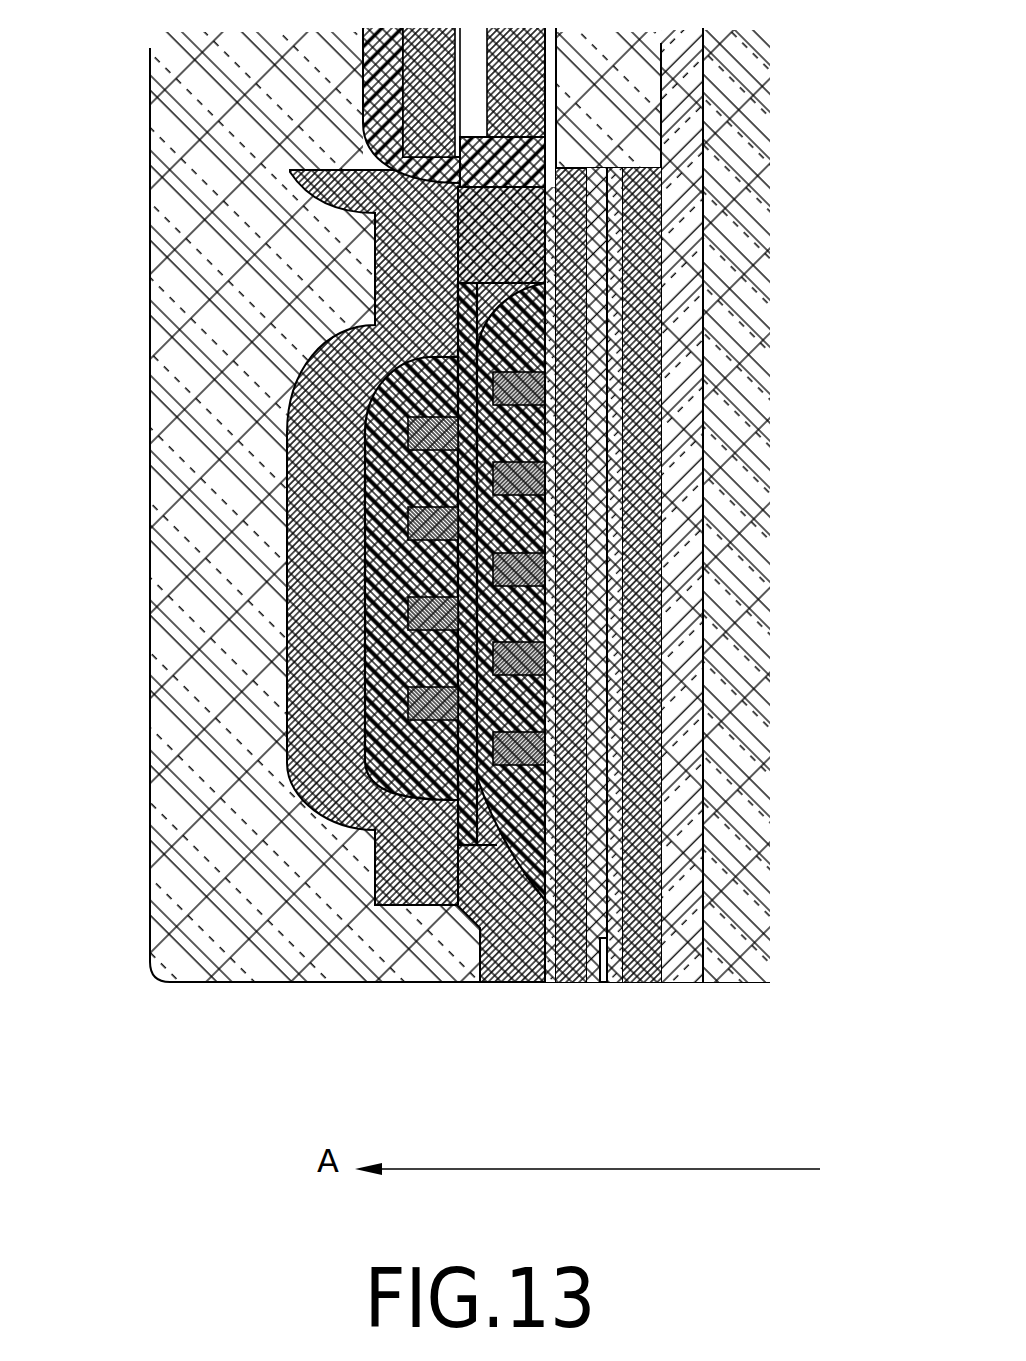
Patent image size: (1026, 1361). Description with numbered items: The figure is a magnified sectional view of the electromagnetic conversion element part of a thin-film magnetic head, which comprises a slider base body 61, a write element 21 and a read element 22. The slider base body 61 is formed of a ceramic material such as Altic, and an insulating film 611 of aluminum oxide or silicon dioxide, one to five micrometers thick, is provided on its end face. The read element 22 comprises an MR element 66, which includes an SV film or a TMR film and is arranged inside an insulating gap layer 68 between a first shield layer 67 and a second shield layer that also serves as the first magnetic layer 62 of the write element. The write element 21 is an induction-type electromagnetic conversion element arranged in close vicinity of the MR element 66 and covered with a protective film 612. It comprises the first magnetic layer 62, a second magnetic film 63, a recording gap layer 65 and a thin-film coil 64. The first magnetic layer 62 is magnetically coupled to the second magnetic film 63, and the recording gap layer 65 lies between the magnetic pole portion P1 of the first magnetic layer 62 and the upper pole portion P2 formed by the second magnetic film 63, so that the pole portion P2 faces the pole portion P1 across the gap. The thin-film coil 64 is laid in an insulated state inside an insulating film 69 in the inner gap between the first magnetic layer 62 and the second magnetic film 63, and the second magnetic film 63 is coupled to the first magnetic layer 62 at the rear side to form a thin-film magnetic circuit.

The slider base body 61 is at (723, 78).
The insulating film 611 is at (680, 376).
The protective film 612 is at (225, 825).
The first magnetic layer 62 is at (585, 672).
The second magnetic film 63 is at (332, 470).
The thin-film coil 64 is at (380, 613).
The recording gap layer 65 is at (550, 617).
The MR element 66 is at (608, 962).
The first shield layer 67 is at (645, 220).
The insulating gap layer 68 is at (590, 778).
The insulating film 69 is at (520, 525).
The write element 21 is at (362, 932).
The read element 22 is at (620, 1000).
The first pole portion P1 is at (566, 982).
The upper pole portion P2 is at (500, 982).